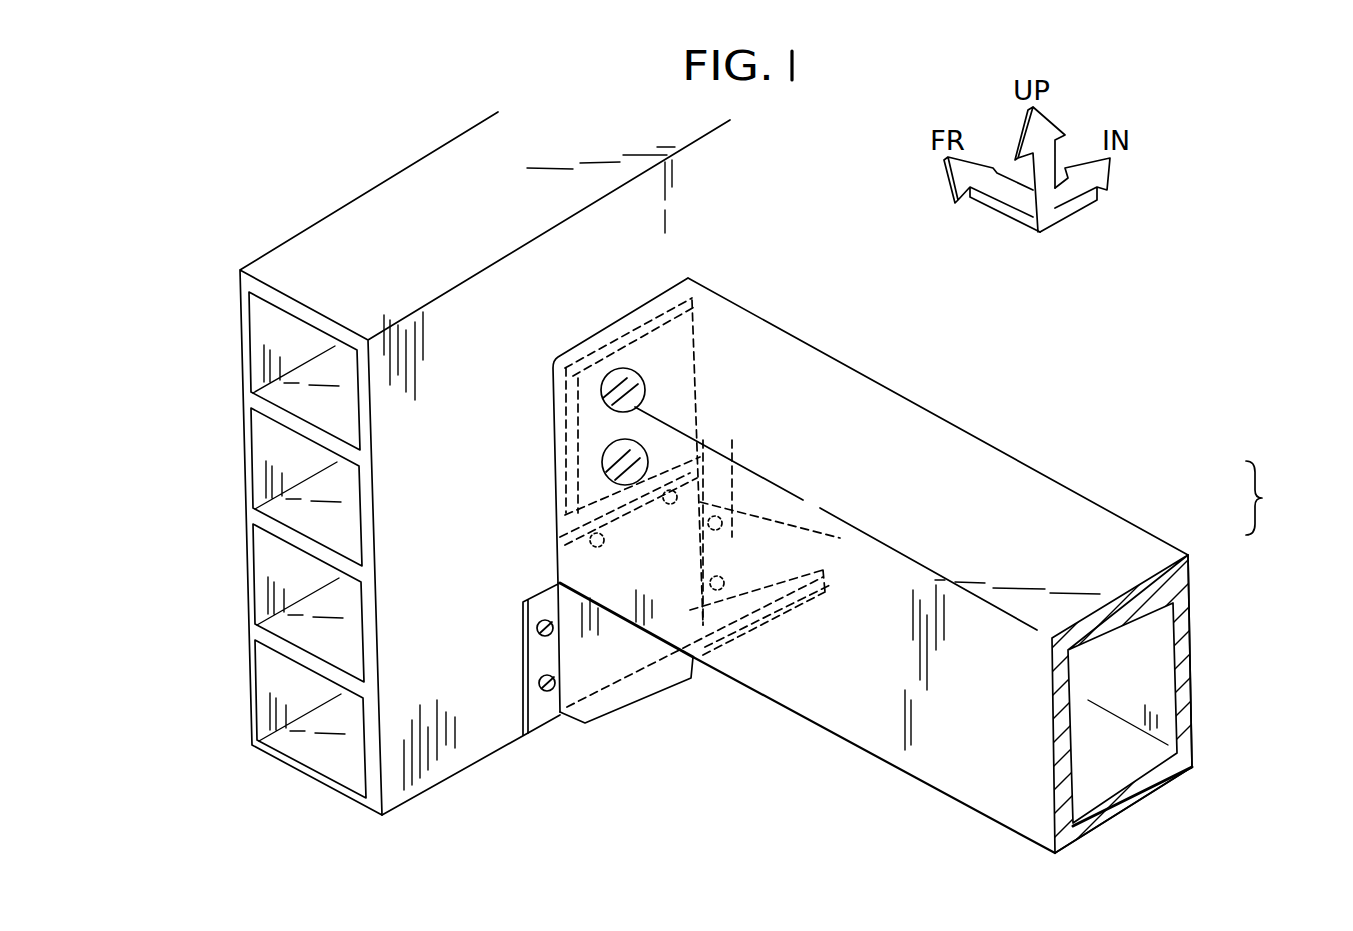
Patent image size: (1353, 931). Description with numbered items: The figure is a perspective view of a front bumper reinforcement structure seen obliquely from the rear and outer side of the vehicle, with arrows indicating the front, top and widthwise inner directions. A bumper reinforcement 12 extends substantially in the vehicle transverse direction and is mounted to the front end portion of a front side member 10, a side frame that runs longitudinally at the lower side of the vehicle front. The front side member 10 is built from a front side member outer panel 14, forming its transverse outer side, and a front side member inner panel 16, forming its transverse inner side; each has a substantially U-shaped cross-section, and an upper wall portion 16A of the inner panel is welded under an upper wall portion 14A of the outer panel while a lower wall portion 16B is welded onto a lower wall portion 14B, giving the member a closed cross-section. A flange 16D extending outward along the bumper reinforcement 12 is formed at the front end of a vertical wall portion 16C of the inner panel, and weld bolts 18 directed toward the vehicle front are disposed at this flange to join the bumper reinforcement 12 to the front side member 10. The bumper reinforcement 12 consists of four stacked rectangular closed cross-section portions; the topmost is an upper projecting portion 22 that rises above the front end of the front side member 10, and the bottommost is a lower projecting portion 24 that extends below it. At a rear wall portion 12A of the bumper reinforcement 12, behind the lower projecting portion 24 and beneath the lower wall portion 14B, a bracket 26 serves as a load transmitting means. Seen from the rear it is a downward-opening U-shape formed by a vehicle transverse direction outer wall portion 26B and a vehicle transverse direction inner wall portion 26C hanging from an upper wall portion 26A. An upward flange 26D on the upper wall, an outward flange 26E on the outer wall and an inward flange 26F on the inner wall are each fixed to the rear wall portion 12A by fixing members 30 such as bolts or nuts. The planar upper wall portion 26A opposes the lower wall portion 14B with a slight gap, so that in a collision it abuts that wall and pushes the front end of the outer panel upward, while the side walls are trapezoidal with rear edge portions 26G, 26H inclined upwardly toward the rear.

The front side member 10 is at (1272, 498).
The bumper reinforcement 12 is at (696, 193).
The rear wall portion 12A is at (420, 773).
The front side member outer panel 14 is at (1127, 534).
The upper wall portion 14A is at (1033, 484).
The lower wall portion 14B is at (1128, 818).
The front side member inner panel 16 is at (1215, 585).
The upper wall portion 16A is at (1128, 633).
The lower wall portion 16B is at (1126, 780).
The vertical wall portion 16C is at (1196, 690).
The flange 16D is at (585, 443).
The weld bolts 18 is at (612, 442).
The upper projecting portion 22 is at (228, 360).
The lower projecting portion 24 is at (235, 705).
The bracket 26 is at (662, 618).
The upper wall portion 26A is at (763, 553).
The vehicle transverse direction outer wall portion 26B is at (575, 714).
The vehicle transverse direction inner wall portion 26C is at (790, 615).
The flange 26D is at (600, 518).
The flange 26E is at (535, 607).
The flange 26F is at (826, 530).
The rear edge portion 26G is at (663, 693).
The rear edge portion 26H is at (768, 635).
The fixing members 30 is at (700, 500).